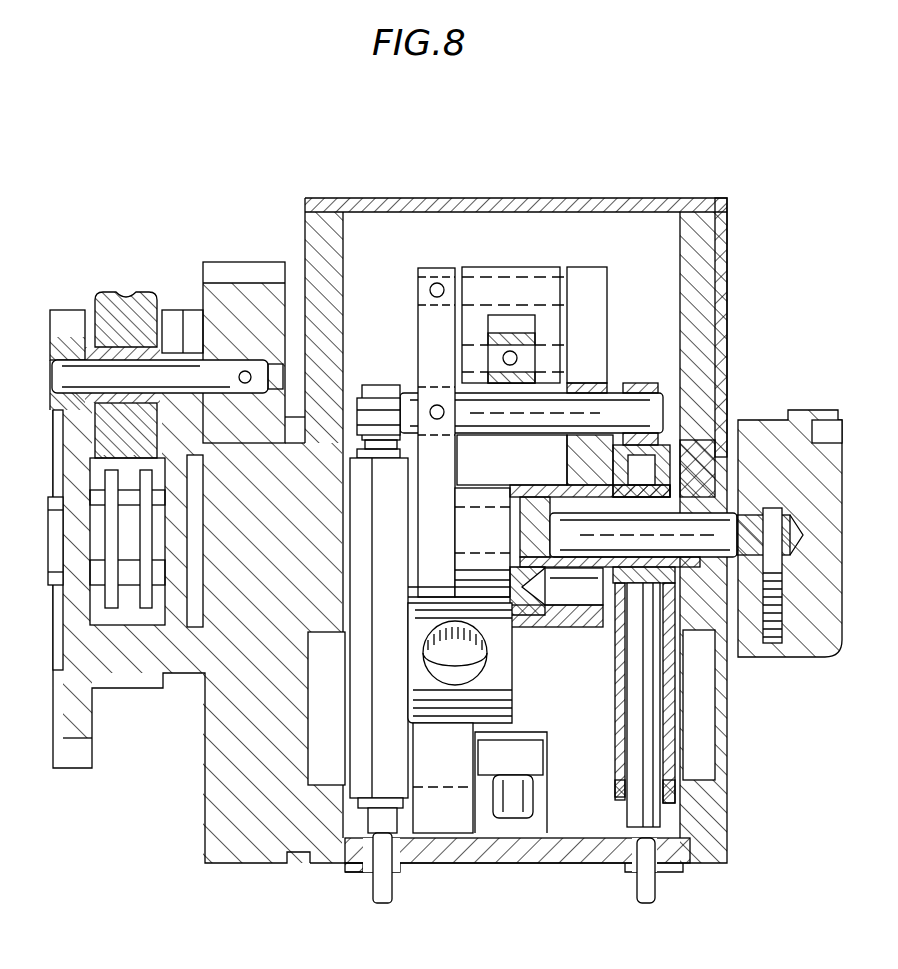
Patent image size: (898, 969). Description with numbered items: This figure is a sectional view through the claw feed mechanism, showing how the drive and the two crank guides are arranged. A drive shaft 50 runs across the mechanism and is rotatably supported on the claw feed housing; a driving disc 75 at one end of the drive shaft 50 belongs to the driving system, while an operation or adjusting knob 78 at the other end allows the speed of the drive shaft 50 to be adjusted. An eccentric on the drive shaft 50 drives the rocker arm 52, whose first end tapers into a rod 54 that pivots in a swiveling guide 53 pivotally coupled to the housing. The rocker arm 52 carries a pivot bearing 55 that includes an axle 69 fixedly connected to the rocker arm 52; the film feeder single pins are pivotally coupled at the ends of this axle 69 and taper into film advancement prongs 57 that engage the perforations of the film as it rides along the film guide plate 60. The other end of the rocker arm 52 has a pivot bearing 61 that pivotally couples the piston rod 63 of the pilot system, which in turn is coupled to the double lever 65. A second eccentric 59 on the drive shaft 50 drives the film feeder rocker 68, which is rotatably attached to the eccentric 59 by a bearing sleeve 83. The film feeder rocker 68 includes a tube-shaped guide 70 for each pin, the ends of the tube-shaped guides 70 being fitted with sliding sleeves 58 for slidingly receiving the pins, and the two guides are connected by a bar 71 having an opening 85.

The drive shaft 50 is at (708, 540).
The rocker arm 52 is at (605, 330).
The swiveling guide 53 is at (487, 760).
The rod 54 is at (517, 790).
The pivot bearing 55 is at (375, 395).
The film advancement prong 57 is at (380, 880).
The sliding sleeve 58 is at (668, 800).
The eccentric 59 is at (585, 520).
The film guide plate 60 is at (455, 858).
The pivot bearing 61 is at (425, 272).
The piston rod 63 is at (472, 320).
The double lever 65 is at (516, 332).
The film feeder rocker 68 is at (385, 640).
The axle 69 is at (408, 408).
The tube-shaped guide 70 is at (385, 497).
The bar 71 is at (436, 730).
The driving disc 75 is at (128, 312).
The adjusting knob 78 is at (838, 662).
The bearing sleeve 83 is at (690, 470).
The opening 85 is at (445, 655).